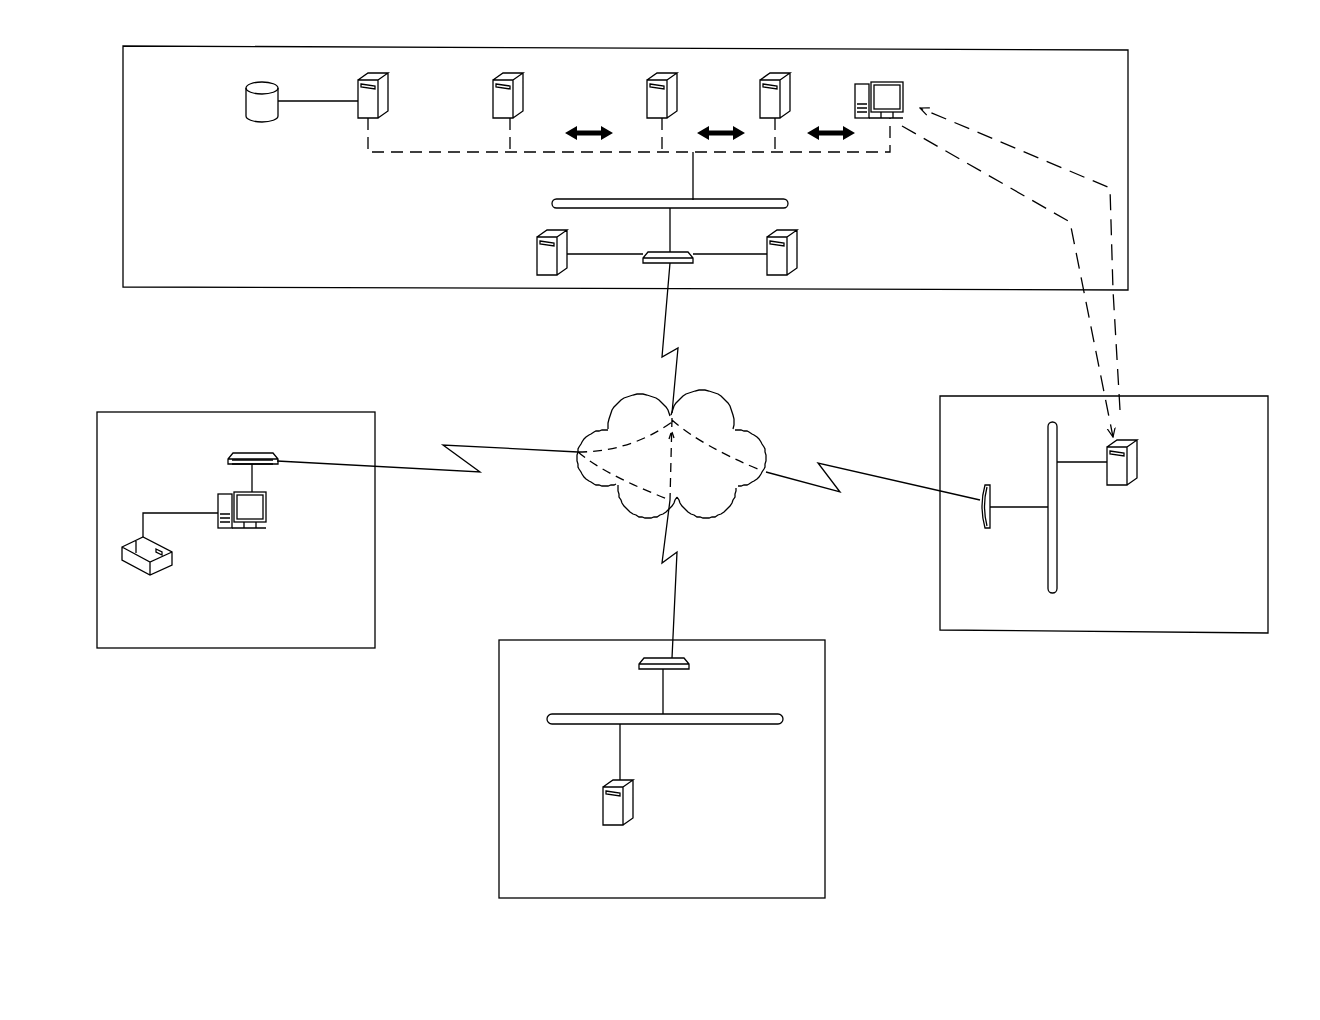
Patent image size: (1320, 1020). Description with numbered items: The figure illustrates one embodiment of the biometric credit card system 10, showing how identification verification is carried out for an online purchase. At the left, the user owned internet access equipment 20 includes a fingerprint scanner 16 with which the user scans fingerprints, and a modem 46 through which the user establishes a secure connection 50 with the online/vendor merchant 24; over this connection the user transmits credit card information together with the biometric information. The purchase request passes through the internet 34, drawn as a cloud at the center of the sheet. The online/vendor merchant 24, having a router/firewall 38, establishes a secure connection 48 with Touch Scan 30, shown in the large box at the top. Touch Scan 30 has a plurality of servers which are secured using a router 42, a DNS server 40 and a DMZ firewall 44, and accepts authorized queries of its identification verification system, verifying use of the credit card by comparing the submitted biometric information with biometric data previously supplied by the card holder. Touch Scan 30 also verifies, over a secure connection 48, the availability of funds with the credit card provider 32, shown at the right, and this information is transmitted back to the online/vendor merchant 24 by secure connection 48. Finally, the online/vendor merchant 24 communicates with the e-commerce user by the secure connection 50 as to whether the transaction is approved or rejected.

The biometric credit card system 10 is at (1198, 218).
The fingerprint scanner 16 is at (153, 573).
The user owned internet access equipment 20 is at (142, 410).
The online/vendor merchant 24 is at (525, 638).
The Touch Scan 30 is at (218, 153).
The credit card provider 32 is at (1185, 395).
The internet 34 is at (630, 423).
The router/firewall 38 is at (640, 663).
The DNS server 40 is at (537, 259).
The router 42 is at (648, 263).
The DMZ firewall 44 is at (798, 260).
The modem 46 is at (252, 452).
The secure connection 48 is at (673, 590).
The secure connection 50 is at (492, 448).